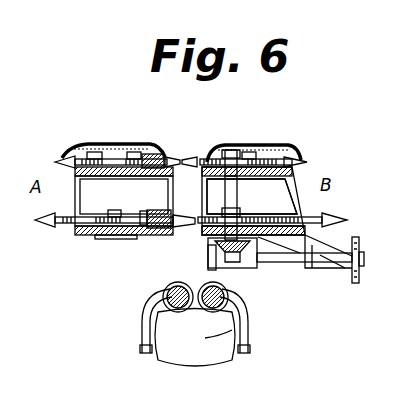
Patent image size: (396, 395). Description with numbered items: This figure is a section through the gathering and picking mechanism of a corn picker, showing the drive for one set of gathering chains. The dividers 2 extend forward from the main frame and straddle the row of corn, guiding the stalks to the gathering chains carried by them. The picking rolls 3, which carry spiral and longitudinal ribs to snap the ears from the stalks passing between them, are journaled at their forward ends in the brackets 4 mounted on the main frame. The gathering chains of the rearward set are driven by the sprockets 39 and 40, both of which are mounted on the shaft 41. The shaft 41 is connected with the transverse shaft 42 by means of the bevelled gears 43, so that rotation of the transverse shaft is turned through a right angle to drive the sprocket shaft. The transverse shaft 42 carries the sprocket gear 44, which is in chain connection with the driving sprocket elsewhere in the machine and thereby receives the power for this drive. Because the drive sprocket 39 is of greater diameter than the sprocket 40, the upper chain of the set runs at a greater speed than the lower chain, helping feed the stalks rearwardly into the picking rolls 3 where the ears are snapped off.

The dividers 2 is at (167, 166).
The picking rolls 3 is at (166, 292).
The brackets 4 is at (160, 328).
The sprocket 39 is at (250, 160).
The sprocket 40 is at (239, 211).
The shaft 41 is at (240, 181).
The transverse shaft 42 is at (278, 265).
The bevelled gears 43 is at (206, 243).
The sprocket gear 44 is at (347, 283).